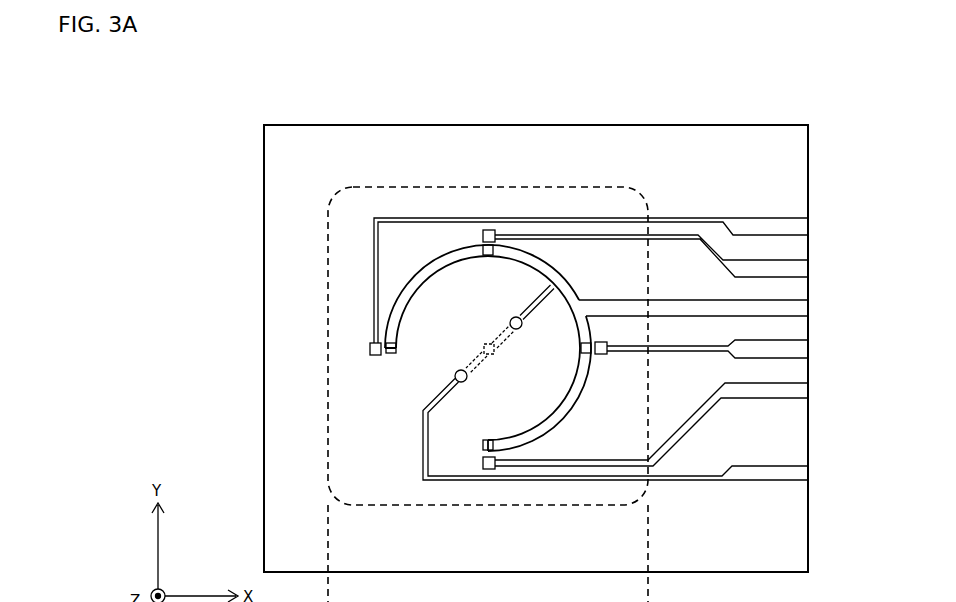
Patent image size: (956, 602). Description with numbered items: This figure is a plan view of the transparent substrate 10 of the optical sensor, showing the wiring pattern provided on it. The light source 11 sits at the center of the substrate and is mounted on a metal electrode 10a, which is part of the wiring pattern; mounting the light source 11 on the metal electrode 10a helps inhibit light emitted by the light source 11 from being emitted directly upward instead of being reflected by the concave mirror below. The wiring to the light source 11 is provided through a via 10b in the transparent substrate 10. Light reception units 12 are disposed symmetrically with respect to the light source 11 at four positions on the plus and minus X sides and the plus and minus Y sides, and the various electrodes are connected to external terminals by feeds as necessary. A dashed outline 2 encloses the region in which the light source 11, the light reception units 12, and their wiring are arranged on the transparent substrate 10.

The transparent substrate 10 is at (264, 186).
The element region 2 is at (328, 271).
The light reception unit 12 is at (397, 349).
The light source 11 is at (486, 344).
The metal electrode 10a is at (496, 352).
The via 10b is at (467, 378).